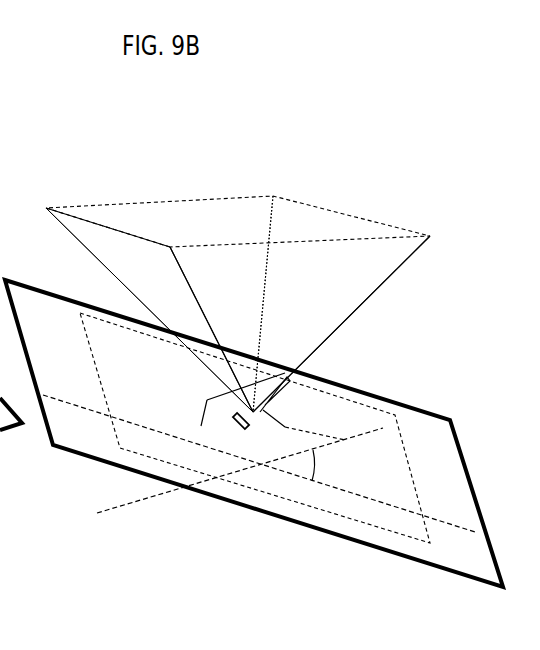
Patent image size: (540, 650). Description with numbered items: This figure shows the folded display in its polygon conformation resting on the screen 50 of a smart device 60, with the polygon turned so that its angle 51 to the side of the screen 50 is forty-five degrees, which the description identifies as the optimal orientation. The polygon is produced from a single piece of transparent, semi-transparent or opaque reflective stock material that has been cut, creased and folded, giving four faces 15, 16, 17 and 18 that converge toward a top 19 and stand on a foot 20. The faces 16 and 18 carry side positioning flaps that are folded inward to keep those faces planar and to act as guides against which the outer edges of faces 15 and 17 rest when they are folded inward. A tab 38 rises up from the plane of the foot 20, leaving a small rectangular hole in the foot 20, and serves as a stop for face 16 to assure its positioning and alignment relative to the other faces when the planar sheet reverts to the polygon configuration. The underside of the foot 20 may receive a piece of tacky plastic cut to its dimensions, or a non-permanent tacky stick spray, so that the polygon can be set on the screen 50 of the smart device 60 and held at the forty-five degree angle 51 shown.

The face 15 is at (159, 304).
The face 16 is at (149, 310).
The face 17 is at (300, 324).
The face 18 is at (341, 304).
The top 19 is at (244, 204).
The foot 20 is at (273, 417).
The tab 38 is at (233, 428).
The screen 50 is at (255, 428).
The angle 51 is at (320, 462).
The smart device 60 is at (251, 433).